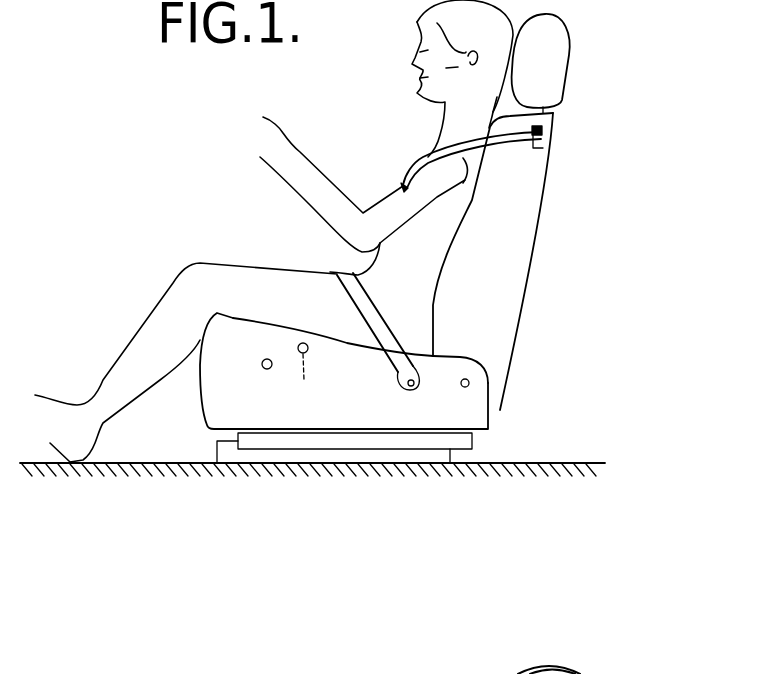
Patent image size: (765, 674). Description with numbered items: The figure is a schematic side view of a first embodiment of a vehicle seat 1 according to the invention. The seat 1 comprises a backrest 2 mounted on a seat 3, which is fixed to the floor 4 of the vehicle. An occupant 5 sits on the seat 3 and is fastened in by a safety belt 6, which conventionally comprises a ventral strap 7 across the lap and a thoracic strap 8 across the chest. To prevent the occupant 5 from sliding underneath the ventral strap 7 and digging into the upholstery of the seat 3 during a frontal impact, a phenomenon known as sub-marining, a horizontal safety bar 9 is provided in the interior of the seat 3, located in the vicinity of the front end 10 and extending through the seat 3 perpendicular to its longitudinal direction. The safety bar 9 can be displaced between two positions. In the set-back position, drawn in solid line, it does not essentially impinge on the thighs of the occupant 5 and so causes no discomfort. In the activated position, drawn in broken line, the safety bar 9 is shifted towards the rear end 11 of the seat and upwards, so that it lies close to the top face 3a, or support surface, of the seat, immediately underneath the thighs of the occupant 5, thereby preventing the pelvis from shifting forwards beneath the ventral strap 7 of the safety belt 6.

The seat 1 is at (578, 266).
The backrest 2 is at (520, 212).
The seat 3 is at (407, 417).
The top face 3a is at (347, 345).
The floor 4 is at (565, 462).
The occupant 5 is at (418, 235).
The safety belt 6 is at (540, 129).
The ventral strap 7 is at (350, 293).
The thoracic strap 8 is at (426, 157).
The safety bar 9 is at (271, 369).
The front end 10 is at (210, 424).
The rear end 11 is at (482, 412).